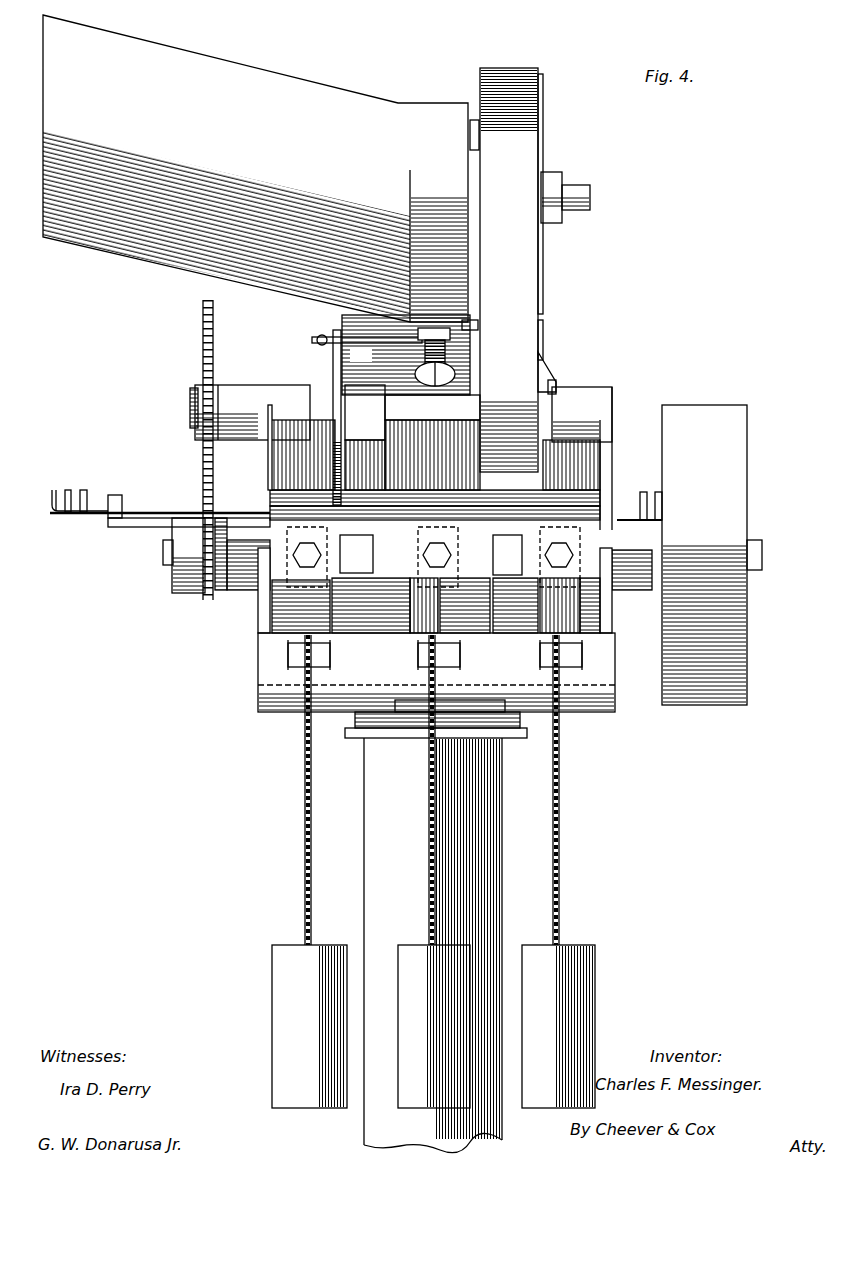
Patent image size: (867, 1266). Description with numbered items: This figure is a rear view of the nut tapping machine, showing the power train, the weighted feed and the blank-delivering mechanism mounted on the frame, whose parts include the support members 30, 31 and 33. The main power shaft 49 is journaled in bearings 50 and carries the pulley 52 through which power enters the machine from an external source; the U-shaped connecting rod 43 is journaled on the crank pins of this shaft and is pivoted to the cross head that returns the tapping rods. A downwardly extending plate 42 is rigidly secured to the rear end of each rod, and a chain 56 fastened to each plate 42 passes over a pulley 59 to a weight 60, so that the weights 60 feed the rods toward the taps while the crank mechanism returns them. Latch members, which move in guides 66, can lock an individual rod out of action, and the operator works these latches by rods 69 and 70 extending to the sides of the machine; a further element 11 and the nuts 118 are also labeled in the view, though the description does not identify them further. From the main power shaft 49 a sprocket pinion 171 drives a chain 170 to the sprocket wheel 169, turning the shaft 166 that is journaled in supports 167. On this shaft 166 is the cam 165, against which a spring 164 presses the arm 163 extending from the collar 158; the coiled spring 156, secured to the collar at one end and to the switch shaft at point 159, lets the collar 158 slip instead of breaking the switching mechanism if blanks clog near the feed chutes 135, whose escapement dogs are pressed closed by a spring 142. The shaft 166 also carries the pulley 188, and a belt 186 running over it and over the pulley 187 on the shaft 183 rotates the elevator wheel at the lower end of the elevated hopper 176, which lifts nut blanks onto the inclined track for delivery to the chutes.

The hopper 176 is at (318, 90).
The pulley 187 is at (542, 146).
The shaft 183 is at (590, 210).
The chain 170 is at (203, 470).
The supports 167 is at (240, 397).
The sprocket wheel 169 is at (192, 405).
The spring 164 is at (325, 336).
The cam 165 is at (330, 385).
The arm 163 is at (406, 355).
The collar 158 is at (470, 320).
The coiled spring 156 is at (452, 334).
The spring attachment point 159 is at (447, 368).
The belt 186 is at (534, 336).
The pulley 188 is at (544, 368).
The feed chute 135 is at (556, 386).
The shaft 166 is at (462, 410).
The spring 142 is at (300, 500).
The guides 66 is at (155, 518).
The pin 11 is at (53, 490).
The rod 70 is at (68, 490).
The rod 69 is at (86, 490).
The sprocket pinion 171 is at (188, 595).
The main power shaft 49 is at (163, 553).
The bearings 50 is at (262, 590).
The nut 118 is at (325, 556).
The connecting rod 43 is at (462, 575).
The plate 42 is at (410, 590).
The support part 31 is at (292, 712).
The pulley 59 is at (332, 662).
The frame portion 33 is at (392, 612).
The support part 30 is at (500, 890).
The chain 56 is at (305, 804).
The weight 60 is at (278, 958).
The pulley 52 is at (738, 465).